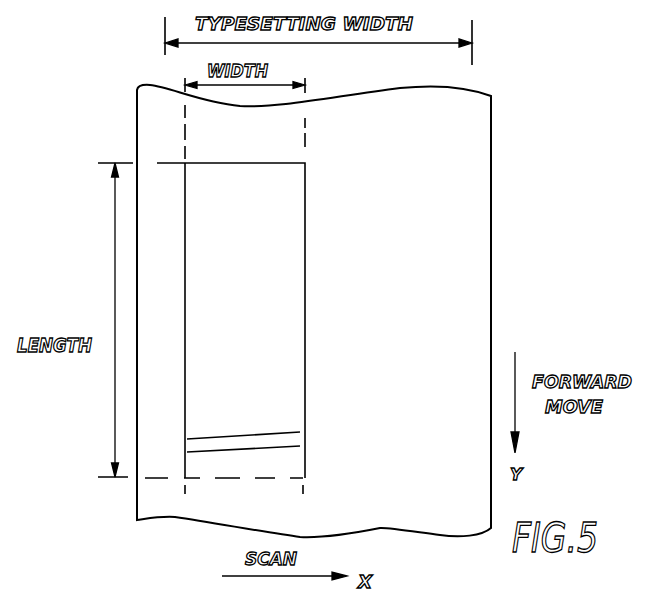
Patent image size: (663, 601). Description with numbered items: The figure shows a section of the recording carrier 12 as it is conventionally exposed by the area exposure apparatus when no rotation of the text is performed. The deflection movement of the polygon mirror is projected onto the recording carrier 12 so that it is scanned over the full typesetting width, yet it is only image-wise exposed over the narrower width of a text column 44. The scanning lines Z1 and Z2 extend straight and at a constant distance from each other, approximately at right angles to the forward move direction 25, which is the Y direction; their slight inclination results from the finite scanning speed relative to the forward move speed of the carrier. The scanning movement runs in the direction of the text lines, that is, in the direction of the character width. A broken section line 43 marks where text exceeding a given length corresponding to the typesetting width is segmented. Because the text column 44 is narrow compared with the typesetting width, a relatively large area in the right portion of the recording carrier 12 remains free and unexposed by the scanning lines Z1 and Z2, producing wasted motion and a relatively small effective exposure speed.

The recording carrier 12 is at (465, 145).
The text column 44 is at (195, 182).
The section line 43 is at (198, 480).
The forward move direction 25 is at (515, 352).
The scanning line Z1 is at (300, 446).
The scanning line Z2 is at (300, 432).